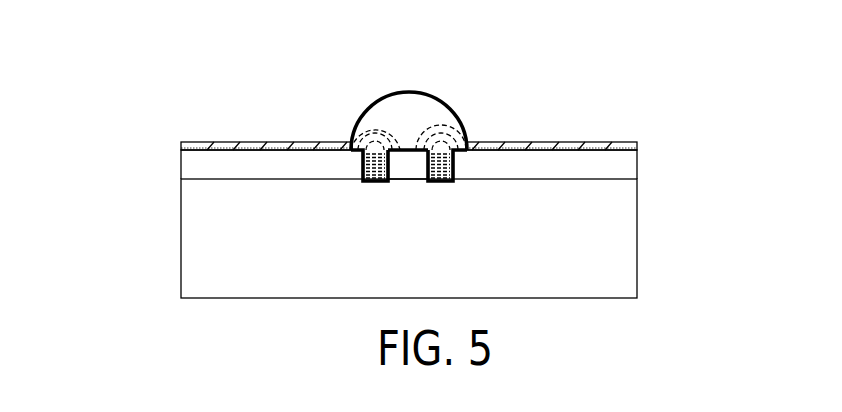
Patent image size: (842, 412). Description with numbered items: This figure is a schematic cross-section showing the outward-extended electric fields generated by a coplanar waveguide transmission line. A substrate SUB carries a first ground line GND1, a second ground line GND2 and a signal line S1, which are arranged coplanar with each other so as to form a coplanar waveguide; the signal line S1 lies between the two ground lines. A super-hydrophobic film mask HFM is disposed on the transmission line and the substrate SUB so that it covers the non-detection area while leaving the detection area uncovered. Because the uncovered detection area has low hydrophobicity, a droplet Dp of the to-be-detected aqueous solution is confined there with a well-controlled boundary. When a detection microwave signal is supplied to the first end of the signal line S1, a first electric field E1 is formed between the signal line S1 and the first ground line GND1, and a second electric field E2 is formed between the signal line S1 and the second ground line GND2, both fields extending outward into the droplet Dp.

The substrate SUB is at (637, 240).
The first ground line GND1 is at (180, 163).
The second ground line GND2 is at (637, 163).
The super-hydrophobic film mask HFM is at (249, 143).
The droplet Dp is at (410, 92).
The first electric field E1 is at (358, 121).
The second electric field E2 is at (472, 108).
The signal line S1 is at (409, 170).